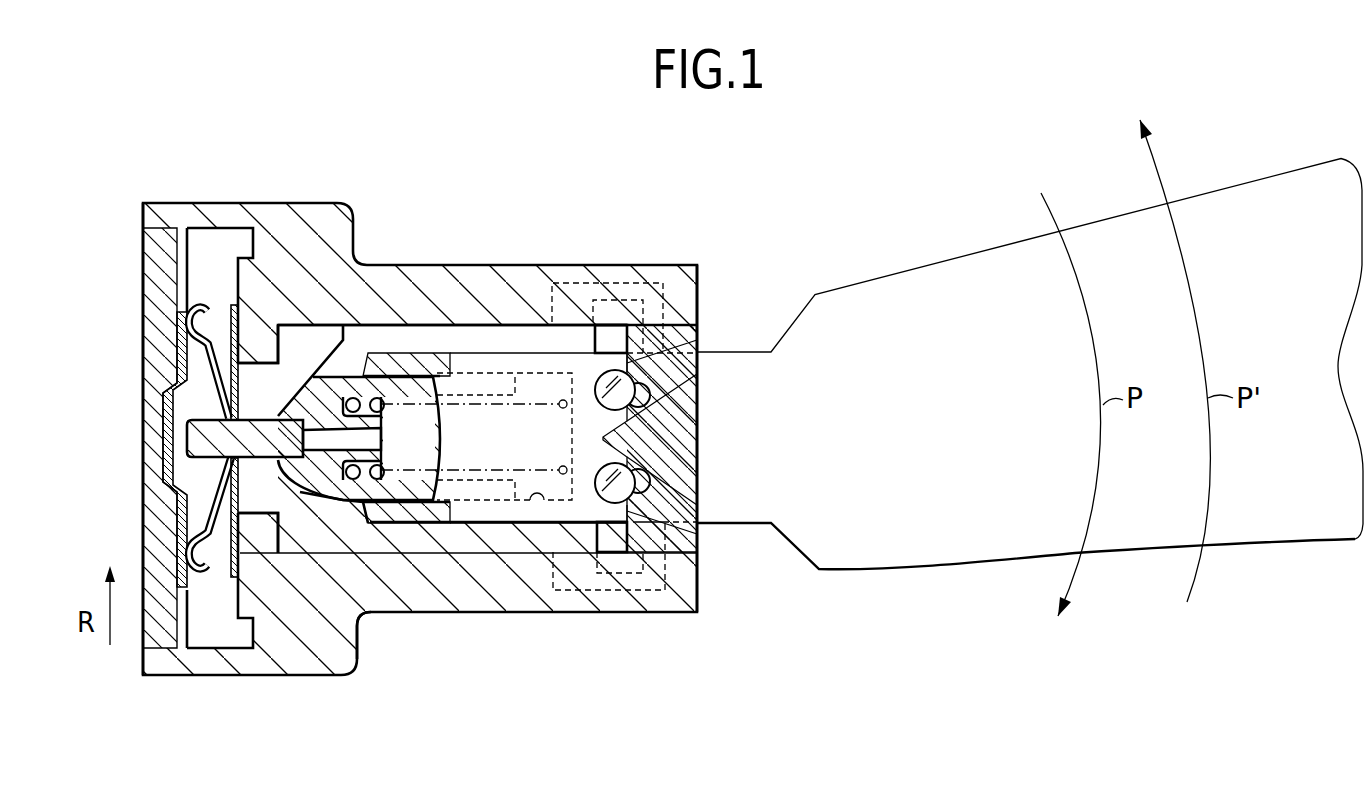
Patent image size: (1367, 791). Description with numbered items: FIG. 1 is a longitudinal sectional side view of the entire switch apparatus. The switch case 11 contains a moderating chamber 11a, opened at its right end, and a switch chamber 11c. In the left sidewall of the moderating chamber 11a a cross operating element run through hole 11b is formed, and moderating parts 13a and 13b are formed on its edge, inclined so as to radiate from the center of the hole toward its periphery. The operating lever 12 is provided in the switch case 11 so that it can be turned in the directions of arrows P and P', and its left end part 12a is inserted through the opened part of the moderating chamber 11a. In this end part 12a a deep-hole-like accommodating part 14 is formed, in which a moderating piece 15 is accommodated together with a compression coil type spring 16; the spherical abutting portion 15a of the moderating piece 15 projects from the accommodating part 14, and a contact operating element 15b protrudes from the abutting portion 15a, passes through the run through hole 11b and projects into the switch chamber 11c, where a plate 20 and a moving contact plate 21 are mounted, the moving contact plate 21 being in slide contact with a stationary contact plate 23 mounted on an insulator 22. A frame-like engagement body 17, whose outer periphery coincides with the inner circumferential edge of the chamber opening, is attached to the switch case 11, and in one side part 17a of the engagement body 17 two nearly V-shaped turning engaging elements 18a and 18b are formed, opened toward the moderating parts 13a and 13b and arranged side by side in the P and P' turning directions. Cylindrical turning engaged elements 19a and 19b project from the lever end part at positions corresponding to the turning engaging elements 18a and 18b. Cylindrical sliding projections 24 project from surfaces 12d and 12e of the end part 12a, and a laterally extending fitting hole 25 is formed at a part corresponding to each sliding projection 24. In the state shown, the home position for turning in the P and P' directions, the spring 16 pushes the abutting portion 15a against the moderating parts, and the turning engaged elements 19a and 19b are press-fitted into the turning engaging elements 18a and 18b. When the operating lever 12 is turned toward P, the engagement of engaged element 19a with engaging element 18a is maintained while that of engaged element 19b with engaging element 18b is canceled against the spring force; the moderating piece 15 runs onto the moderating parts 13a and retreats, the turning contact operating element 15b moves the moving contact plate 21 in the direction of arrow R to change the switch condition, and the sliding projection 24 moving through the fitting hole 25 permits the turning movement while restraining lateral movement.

The switch case 11 is at (272, 203).
The moderating chamber 11a is at (450, 350).
The operating element run through hole 11b is at (276, 414).
The switch chamber 11c is at (195, 472).
The operating lever 12 is at (857, 287).
The end part of the operating lever 12a is at (377, 510).
The surface of the end part 12d is at (484, 352).
The surface of the end part 12e is at (470, 525).
The moderating part 13a is at (355, 322).
The moderating part 13b is at (340, 527).
The accommodating part 14 is at (537, 500).
The moderating piece 15 is at (515, 385).
The abutting portion 15a is at (312, 497).
The contact operating element 15b is at (198, 417).
The spring 16 is at (559, 404).
The engagement body 17 is at (690, 540).
The side part of the engagement body 17a is at (625, 560).
The turning engaging element 18a is at (665, 400).
The turning engaging element 18b is at (665, 470).
The turning engaged element 19a is at (640, 350).
The turning engaged element 19b is at (593, 525).
The plate 20 is at (212, 302).
The moving contact plate 21 is at (173, 373).
The insulator 22 is at (148, 271).
The stationary contact plate 23 is at (170, 327).
The sliding projection 24 is at (641, 300).
The fitting hole 25 is at (579, 283).